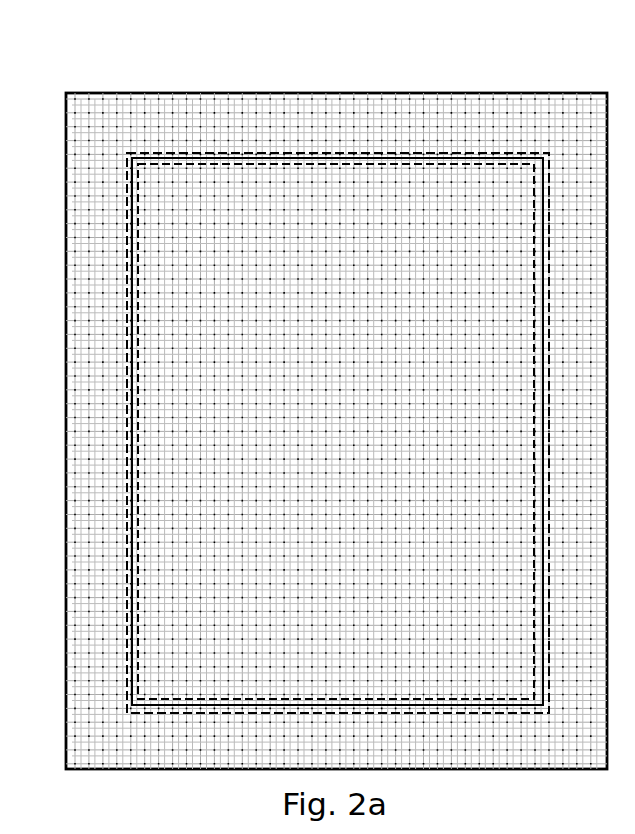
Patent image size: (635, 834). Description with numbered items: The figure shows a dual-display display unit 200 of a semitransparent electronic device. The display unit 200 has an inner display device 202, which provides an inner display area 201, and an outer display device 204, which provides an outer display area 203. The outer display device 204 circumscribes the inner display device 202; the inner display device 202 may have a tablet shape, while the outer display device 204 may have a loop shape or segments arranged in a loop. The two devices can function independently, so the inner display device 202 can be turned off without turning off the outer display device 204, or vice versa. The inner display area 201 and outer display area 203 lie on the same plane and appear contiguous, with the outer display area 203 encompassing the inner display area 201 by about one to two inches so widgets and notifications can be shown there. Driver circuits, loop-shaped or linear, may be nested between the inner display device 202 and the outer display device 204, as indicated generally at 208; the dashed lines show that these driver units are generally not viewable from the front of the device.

The display unit 200 is at (314, 398).
The inner display area 201 is at (217, 177).
The inner display device 202 is at (157, 153).
The outer display area 203 is at (412, 116).
The outer display device 204 is at (453, 96).
The driver circuit location 208 is at (127, 320).